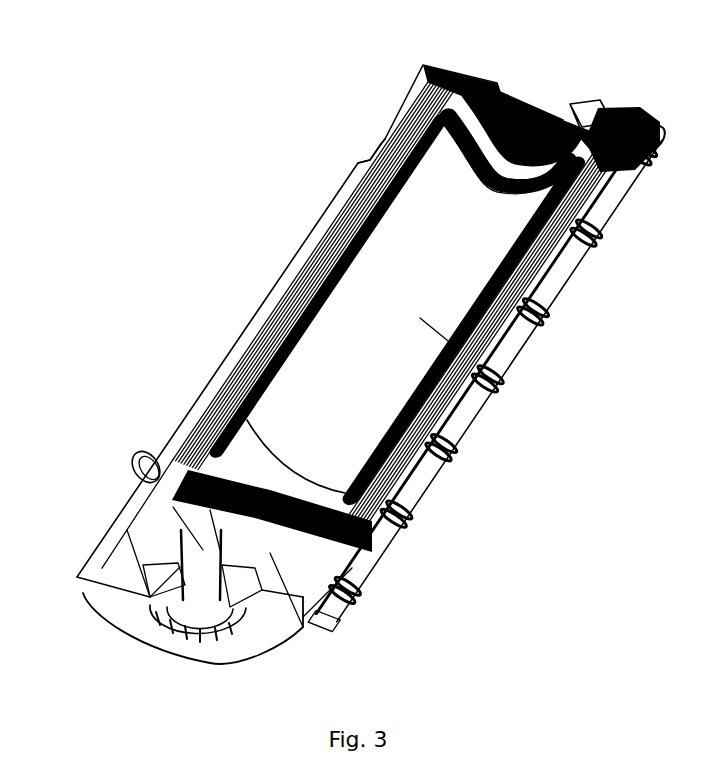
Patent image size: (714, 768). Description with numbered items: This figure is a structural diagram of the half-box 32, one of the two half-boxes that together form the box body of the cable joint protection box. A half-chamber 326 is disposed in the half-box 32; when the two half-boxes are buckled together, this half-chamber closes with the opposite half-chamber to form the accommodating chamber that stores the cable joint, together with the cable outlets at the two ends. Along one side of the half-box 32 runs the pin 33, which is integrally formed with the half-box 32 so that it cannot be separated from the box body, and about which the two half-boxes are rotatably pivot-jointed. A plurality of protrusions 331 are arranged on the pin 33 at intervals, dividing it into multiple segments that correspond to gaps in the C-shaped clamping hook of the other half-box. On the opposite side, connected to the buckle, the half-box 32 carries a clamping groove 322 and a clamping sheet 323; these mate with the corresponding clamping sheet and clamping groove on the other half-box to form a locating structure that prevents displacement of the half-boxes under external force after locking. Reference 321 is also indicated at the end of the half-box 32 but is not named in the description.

The half-box 32 is at (425, 54).
The end drive mechanism 321 is at (90, 598).
The clamping groove 322 is at (370, 152).
The clamping sheet 323 is at (137, 449).
The half-chamber 326 is at (507, 387).
The pin 33 is at (373, 550).
The protrusions 331 is at (453, 460).